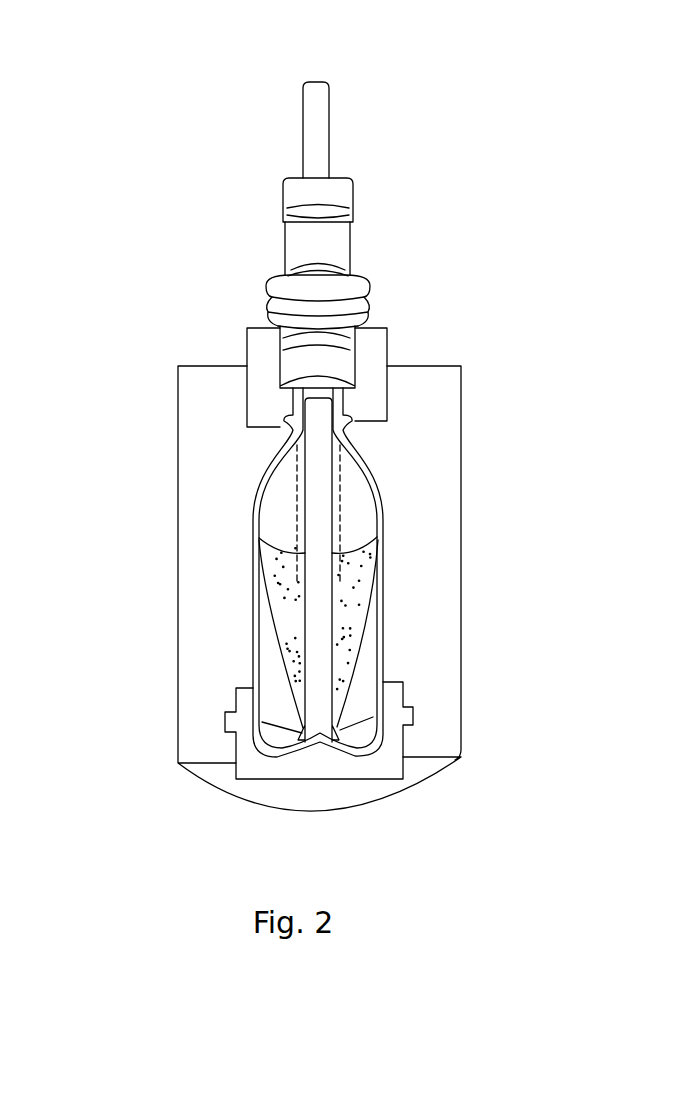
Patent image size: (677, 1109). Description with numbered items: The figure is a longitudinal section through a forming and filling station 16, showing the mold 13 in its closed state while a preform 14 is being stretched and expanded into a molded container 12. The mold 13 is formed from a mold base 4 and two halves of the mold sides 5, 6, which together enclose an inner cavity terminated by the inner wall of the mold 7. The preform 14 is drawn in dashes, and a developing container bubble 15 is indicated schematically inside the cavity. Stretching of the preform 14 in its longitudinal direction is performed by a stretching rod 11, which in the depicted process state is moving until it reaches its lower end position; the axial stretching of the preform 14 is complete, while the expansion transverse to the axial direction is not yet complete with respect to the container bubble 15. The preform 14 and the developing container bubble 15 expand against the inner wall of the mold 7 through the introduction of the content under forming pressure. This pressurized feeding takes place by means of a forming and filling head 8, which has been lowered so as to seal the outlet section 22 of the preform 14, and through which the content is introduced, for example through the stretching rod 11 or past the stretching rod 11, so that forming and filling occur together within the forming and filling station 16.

The mold base 4 is at (274, 792).
The mold side half 5 is at (202, 587).
The mold side half 6 is at (448, 663).
The inner wall of the mold 7 is at (377, 490).
The forming and filling head 8 is at (262, 277).
The stretching rod 11 is at (330, 122).
The molded container 12 is at (255, 627).
The mold 13 is at (538, 535).
The preform 14 is at (262, 495).
The container bubble 15 is at (280, 655).
The forming and filling station 16 is at (470, 305).
The outlet section 22 is at (248, 408).